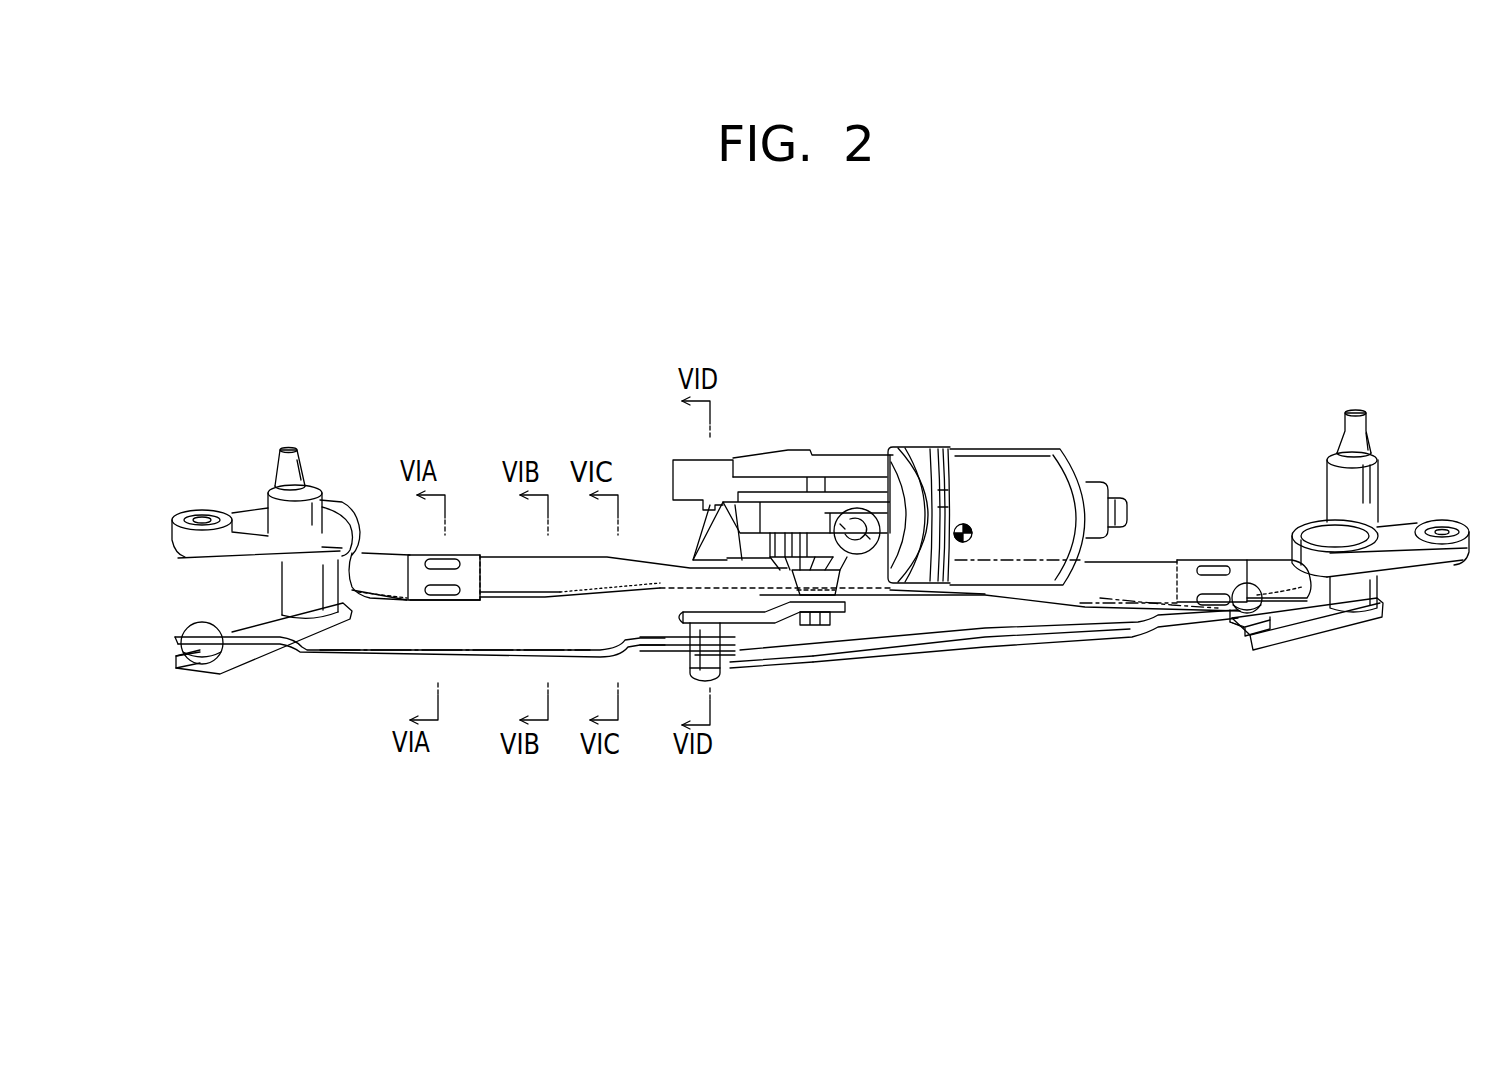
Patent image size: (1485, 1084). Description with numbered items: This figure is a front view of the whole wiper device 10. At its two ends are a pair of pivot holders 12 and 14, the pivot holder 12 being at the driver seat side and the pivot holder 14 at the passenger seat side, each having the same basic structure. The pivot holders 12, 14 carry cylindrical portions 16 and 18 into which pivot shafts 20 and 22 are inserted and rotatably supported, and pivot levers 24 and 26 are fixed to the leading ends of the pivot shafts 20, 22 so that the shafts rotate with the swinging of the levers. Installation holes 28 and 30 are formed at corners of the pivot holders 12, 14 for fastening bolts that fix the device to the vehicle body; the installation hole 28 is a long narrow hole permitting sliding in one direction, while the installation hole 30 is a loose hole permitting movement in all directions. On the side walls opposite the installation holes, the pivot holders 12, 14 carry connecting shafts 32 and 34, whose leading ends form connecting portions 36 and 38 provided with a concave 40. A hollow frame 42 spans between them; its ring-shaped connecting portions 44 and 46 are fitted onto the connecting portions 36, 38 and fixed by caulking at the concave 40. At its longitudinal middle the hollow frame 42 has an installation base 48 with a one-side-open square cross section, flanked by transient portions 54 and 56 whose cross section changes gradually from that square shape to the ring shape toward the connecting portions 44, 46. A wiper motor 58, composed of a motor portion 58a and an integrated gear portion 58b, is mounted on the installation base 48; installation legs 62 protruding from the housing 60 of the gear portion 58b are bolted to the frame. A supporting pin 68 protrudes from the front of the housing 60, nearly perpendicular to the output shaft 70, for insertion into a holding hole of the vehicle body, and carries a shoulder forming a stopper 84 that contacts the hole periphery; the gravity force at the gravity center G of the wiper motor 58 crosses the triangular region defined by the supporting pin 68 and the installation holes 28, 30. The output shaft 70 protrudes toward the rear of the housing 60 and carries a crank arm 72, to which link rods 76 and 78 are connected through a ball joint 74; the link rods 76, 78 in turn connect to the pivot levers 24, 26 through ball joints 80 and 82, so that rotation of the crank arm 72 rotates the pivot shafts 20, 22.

The wiper device 10 is at (788, 348).
The pivot holder 12 is at (347, 500).
The pivot holder 14 is at (1298, 546).
The cylindrical portion 16 is at (270, 485).
The cylindrical portion 18 is at (1375, 486).
The pivot shaft 20 is at (286, 450).
The pivot shaft 22 is at (1353, 412).
The pivot lever 24 is at (261, 627).
The pivot lever 26 is at (1311, 638).
The installation hole 28 is at (205, 510).
The installation hole 30 is at (1445, 516).
The connecting shaft 32 is at (375, 545).
The connecting shaft 34 is at (1265, 578).
The connecting portion 36 is at (461, 554).
The connecting portion 38 is at (1184, 559).
The concave 40 is at (445, 588).
The hollow frame 42 is at (975, 615).
The connecting portion 44 is at (400, 585).
The connecting portion 46 is at (1264, 611).
The installation base 48 is at (705, 506).
The transient portion 54 is at (600, 646).
The transient portion 56 is at (1082, 608).
The wiper motor 58 is at (977, 365).
The motor portion 58a is at (950, 437).
The gear portion 58b is at (855, 435).
The housing 60 is at (760, 496).
The installation leg 62 is at (696, 571).
The supporting pin 68 is at (864, 538).
The output shaft 70 is at (813, 603).
The crank arm 72 is at (750, 623).
The ball joint 74 is at (705, 680).
The link rod 76 is at (475, 646).
The link rod 78 is at (1052, 628).
The ball joint 80 is at (205, 626).
The ball joint 82 is at (1248, 626).
The stopper 84 is at (822, 497).
The gravity center G is at (970, 526).